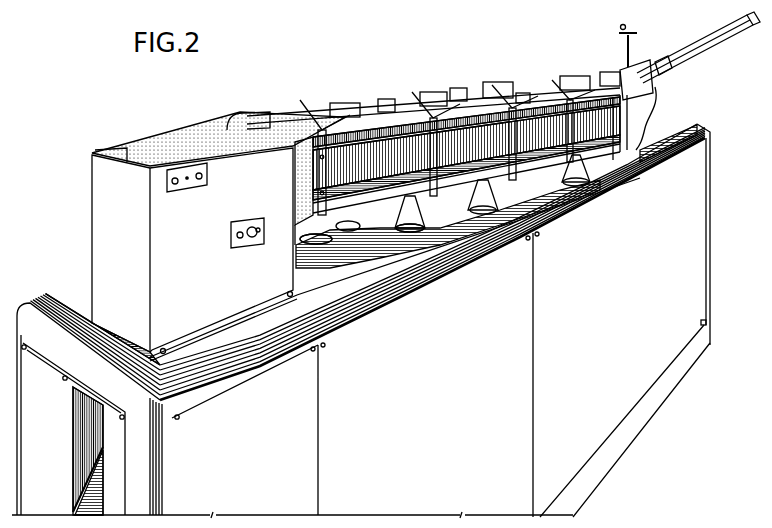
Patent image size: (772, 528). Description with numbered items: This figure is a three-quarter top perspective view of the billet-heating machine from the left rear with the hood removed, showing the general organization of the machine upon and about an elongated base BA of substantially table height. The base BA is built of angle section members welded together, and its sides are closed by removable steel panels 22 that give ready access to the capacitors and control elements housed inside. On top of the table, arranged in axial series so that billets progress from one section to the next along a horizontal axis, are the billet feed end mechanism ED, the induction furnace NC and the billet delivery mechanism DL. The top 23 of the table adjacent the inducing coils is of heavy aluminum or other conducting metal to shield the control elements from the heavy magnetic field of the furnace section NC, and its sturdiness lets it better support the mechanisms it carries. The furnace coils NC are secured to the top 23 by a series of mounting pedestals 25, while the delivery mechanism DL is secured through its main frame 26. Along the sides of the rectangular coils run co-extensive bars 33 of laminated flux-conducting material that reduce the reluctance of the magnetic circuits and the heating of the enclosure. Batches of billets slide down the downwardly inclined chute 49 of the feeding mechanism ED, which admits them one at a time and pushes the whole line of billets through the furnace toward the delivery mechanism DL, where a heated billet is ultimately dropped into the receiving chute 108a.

The removable panels 22 is at (632, 309).
The elongated base BA is at (42, 301).
The receiving chute 108a is at (82, 498).
The main frame 26 is at (204, 314).
The billet delivery mechanism DL is at (126, 135).
The induction furnace NC is at (437, 163).
The bars of laminated flux-conducting material 33 is at (523, 93).
The top of the table 23 is at (343, 238).
The mounting pedestals 25 is at (403, 226).
The billet feed end mechanism ED is at (658, 90).
The chute 49 is at (693, 58).